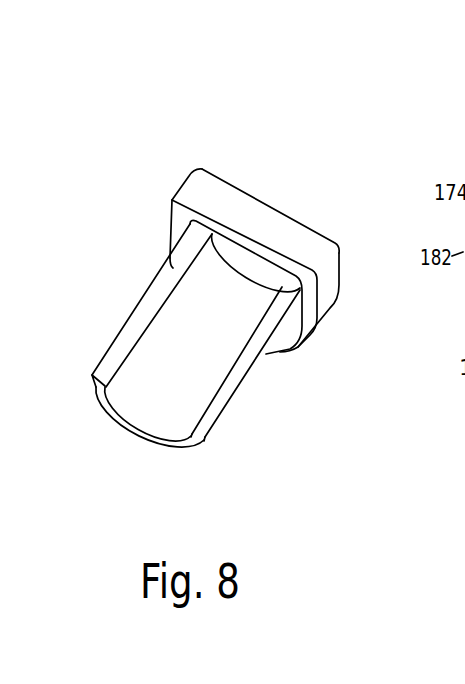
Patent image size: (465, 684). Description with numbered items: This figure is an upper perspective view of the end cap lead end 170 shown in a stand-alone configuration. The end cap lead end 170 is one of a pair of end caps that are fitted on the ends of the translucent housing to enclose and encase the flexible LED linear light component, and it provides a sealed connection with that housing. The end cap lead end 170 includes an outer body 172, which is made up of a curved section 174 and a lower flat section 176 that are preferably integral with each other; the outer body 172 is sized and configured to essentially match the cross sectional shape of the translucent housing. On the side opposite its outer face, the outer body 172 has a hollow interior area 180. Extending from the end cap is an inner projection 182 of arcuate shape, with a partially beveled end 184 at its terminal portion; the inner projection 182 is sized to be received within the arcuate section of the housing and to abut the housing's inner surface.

The end cap lead end 170 is at (296, 137).
The outer body 172 is at (333, 191).
The curved section 174 is at (322, 321).
The lower flat section 176 is at (223, 180).
The hollow interior area 180 is at (247, 267).
The inner projection 182 is at (94, 334).
The partially beveled end 184 is at (199, 442).